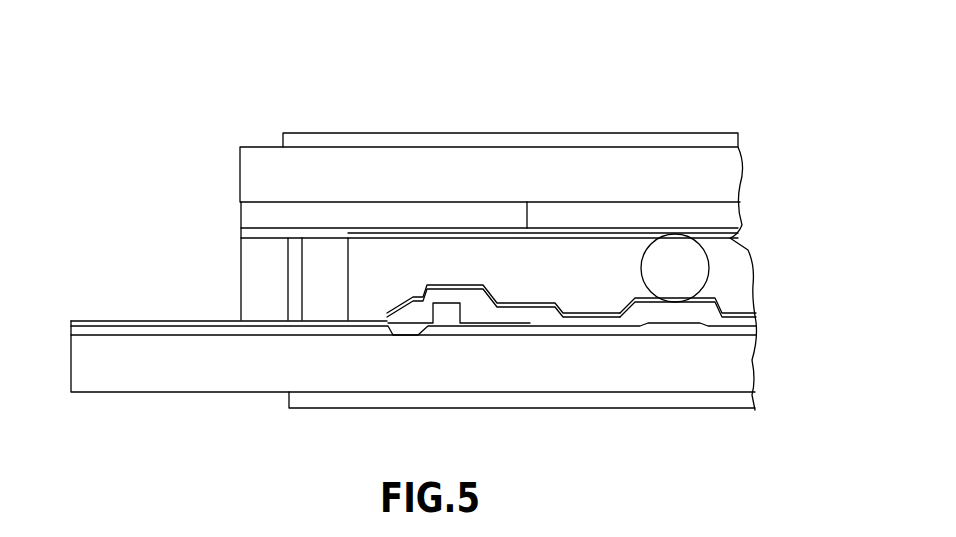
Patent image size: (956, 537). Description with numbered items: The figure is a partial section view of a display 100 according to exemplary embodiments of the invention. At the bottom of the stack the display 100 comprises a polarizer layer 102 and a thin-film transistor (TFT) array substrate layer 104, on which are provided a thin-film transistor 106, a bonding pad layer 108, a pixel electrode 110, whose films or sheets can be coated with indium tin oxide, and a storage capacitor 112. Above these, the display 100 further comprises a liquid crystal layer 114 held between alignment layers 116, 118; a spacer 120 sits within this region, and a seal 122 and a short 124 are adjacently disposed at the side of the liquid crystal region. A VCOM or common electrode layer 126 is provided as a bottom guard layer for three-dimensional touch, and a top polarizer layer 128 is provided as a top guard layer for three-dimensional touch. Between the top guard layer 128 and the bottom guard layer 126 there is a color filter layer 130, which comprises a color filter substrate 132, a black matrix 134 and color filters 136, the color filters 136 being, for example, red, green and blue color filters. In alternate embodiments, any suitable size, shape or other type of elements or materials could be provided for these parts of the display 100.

The display 100 is at (147, 58).
The polarizer layer 102 is at (740, 400).
The thin-film transistor (TFT) array substrate layer 104 is at (732, 363).
The thin-film transistor (TFT) 106 is at (443, 285).
The bonding pad layer 108 is at (127, 330).
The pixel electrode 110 is at (600, 322).
The storage capacitor 112 is at (680, 322).
The liquid crystal layer 114 is at (733, 268).
The alignment layer 116 is at (745, 312).
The alignment layer 118 is at (738, 238).
The spacer 120 is at (672, 257).
The seal 122 is at (317, 272).
The short 124 is at (250, 296).
The VCOM (common electrode) layer 126 is at (560, 228).
The top polarizer layer 128 is at (731, 136).
The color filter layer 130 is at (803, 147).
The color filter substrate 132 is at (335, 168).
The black matrix 134 is at (283, 212).
The color filters 136 is at (720, 208).